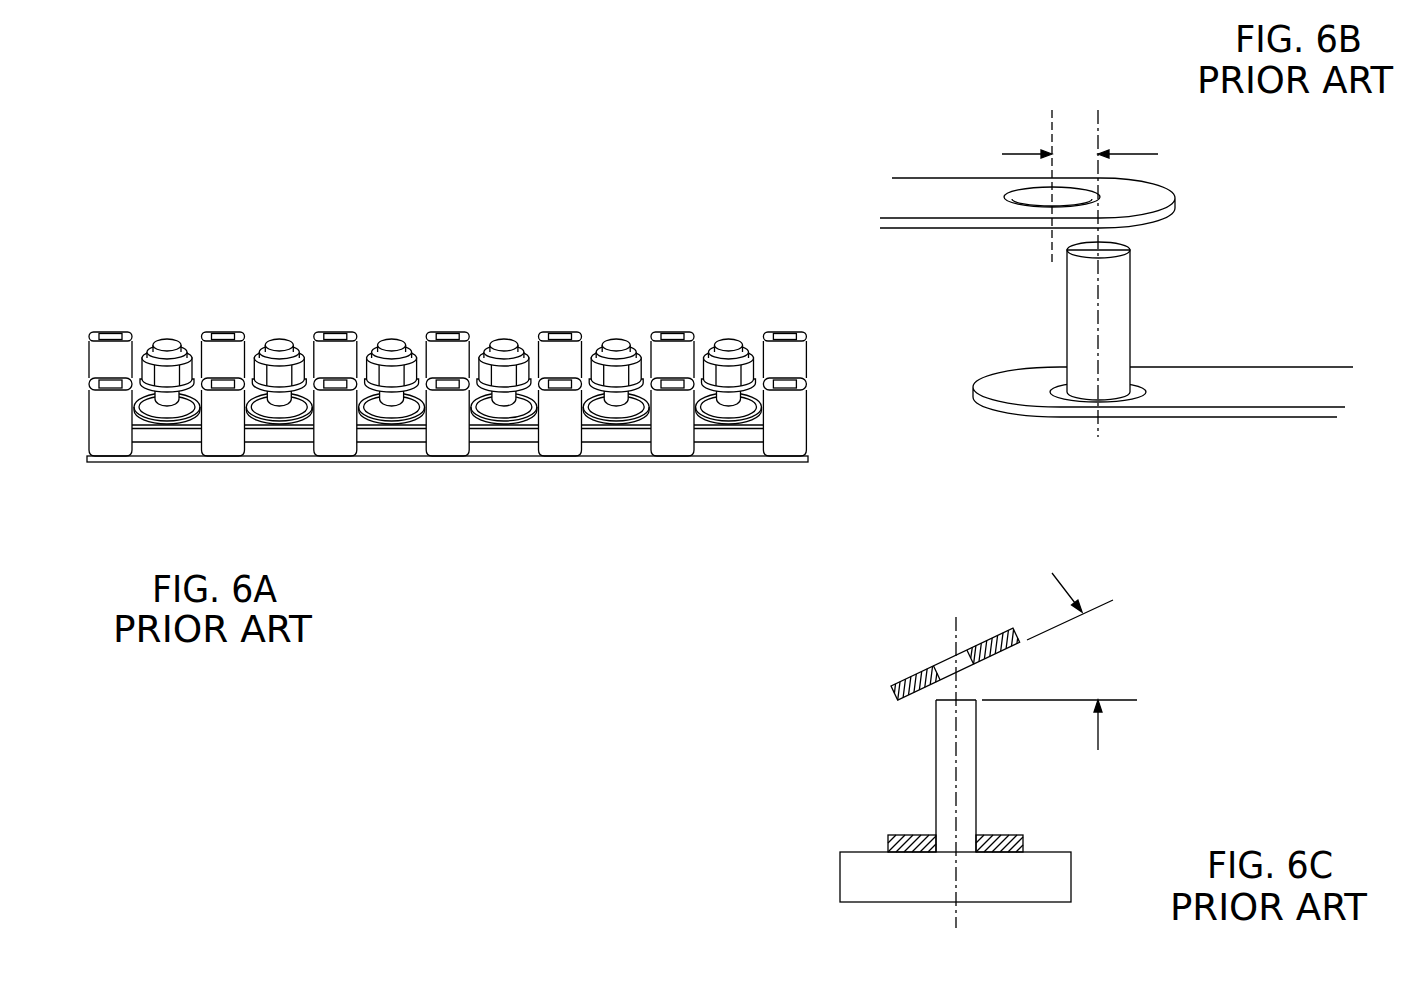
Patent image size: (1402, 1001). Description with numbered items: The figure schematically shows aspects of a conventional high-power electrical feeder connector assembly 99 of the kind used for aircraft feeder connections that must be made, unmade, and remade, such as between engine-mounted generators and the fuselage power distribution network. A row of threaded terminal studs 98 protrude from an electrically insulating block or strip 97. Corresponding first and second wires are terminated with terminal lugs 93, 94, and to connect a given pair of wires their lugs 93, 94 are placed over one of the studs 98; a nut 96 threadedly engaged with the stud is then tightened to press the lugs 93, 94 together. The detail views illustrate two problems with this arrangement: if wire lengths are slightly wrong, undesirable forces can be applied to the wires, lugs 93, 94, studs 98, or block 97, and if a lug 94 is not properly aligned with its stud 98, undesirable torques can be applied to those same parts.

In FIG. 6B, the terminal lug 93 is at (1172, 395).
In FIG. 6C, the terminal lug 93 is at (1020, 835).
In FIG. 6B, the terminal lug 94 is at (985, 200).
In FIG. 6C, the terminal lug 94 is at (906, 677).
In FIG. 6A, the nut 96 is at (185, 372).
In FIG. 6A, the electrically insulating block or strip 97 is at (678, 372).
In FIG. 6C, the electrically insulating block or strip 97 is at (860, 884).
In FIG. 6A, the threaded terminal stud 98 is at (392, 352).
In FIG. 6B, the threaded terminal stud 98 is at (1120, 312).
In FIG. 6C, the threaded terminal stud 98 is at (948, 797).
In FIG. 6A, the high-power electrical feeder connector assembly 99 is at (689, 273).